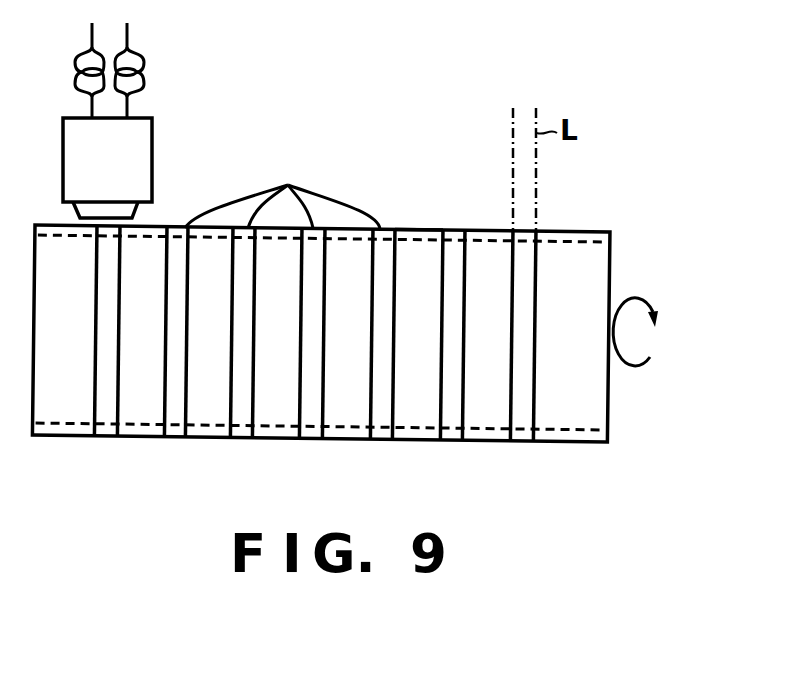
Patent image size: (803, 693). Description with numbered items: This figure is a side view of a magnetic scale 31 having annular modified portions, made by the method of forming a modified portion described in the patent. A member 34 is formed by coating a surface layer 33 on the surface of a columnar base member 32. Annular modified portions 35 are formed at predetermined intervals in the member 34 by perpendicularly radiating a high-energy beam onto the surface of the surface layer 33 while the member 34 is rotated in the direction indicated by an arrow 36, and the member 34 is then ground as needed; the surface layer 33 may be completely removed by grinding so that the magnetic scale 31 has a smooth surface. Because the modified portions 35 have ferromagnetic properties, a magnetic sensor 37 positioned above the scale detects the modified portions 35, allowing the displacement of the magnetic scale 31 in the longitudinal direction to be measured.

The magnetic scale 31 is at (578, 198).
The columnar base member 32 is at (612, 257).
The surface layer 33 is at (416, 228).
The member 34 is at (613, 210).
The annular modified portions 35 is at (288, 185).
The arrow 36 is at (653, 296).
The magnetic sensor 37 is at (152, 147).